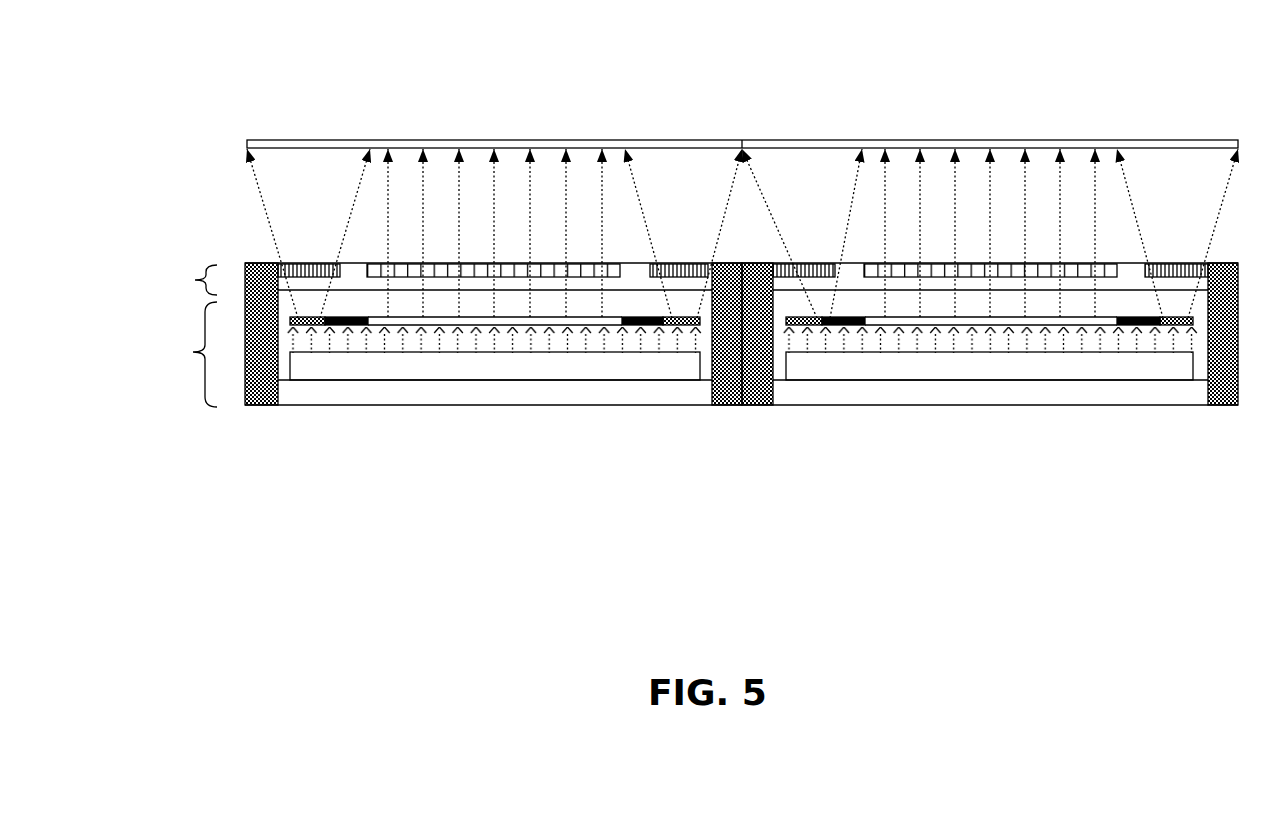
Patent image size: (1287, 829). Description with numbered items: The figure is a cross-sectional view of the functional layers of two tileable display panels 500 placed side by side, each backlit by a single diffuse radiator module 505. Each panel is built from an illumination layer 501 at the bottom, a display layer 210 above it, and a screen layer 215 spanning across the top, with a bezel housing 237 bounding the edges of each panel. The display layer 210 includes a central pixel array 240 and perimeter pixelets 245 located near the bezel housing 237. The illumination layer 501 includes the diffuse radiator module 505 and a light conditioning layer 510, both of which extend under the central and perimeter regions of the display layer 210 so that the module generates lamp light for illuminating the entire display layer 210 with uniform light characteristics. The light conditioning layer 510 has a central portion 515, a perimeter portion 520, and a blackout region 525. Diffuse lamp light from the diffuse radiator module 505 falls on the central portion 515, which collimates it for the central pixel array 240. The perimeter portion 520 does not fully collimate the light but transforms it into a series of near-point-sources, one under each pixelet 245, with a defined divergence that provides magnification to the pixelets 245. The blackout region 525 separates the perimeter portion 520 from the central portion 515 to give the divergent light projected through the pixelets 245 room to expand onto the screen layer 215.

The tileable display panel 500 is at (268, 72).
The screen layer 215 is at (233, 139).
The bezel housing 237 is at (263, 270).
The perimeter pixelets 245 is at (328, 263).
The central pixel array 240 is at (453, 258).
The light conditioning layer 510 is at (413, 303).
The display layer 210 is at (187, 280).
The illumination layer 501 is at (636, 354).
The diffuse radiator module 505 is at (578, 374).
The perimeter portion 520 is at (300, 328).
The blackout region 525 is at (355, 328).
The central portion 515 is at (478, 340).